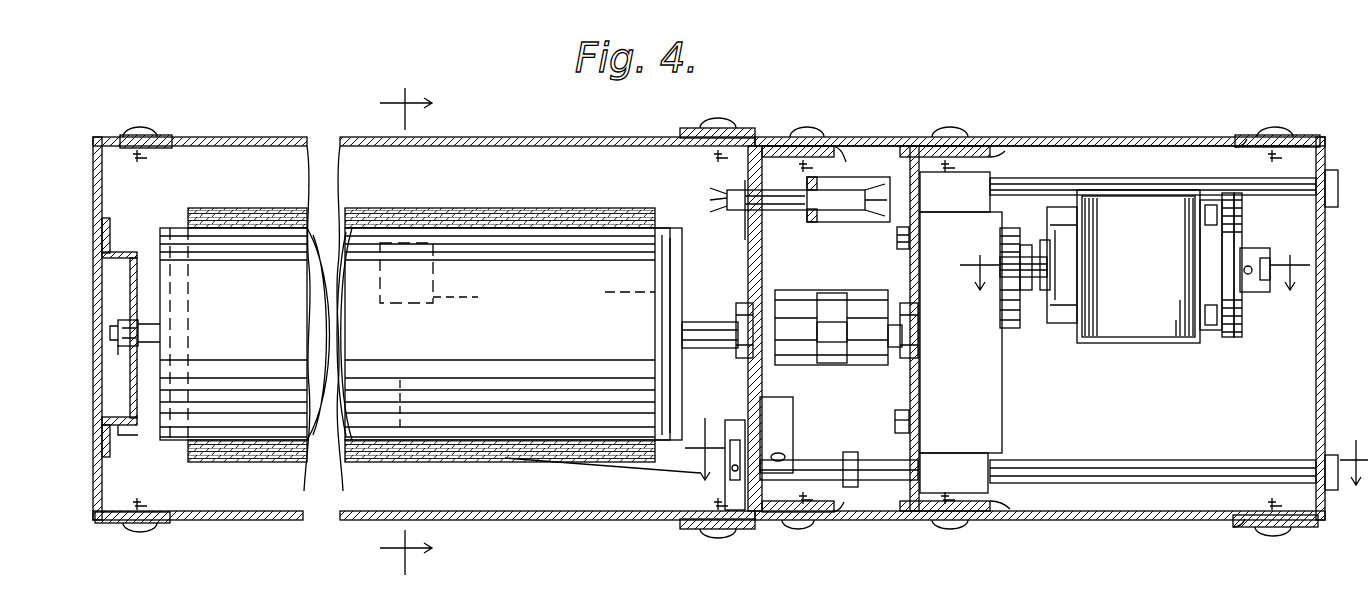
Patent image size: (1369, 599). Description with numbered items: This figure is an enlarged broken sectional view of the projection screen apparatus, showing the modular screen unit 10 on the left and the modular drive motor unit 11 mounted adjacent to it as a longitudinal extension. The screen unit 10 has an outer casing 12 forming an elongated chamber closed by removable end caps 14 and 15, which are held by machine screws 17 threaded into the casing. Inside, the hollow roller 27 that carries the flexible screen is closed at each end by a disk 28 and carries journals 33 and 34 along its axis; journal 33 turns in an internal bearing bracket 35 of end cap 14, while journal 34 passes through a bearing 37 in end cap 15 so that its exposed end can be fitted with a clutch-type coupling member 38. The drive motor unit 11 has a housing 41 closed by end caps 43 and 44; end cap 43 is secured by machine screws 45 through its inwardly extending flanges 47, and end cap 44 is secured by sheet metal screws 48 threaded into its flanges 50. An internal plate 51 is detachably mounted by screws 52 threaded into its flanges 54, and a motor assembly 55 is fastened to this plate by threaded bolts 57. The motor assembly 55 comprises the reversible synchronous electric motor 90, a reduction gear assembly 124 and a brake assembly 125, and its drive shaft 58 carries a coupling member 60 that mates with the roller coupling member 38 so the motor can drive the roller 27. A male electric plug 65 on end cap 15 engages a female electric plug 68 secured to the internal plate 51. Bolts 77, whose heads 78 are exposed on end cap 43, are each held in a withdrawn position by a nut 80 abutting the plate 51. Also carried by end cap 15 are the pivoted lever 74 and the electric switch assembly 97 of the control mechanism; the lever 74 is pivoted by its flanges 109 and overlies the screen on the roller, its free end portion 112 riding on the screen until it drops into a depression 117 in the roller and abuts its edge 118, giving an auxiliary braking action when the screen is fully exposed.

The modular screen unit 10 is at (567, 538).
The modular drive motor unit 11 is at (1097, 533).
The outer casing 12 is at (515, 140).
The end cap 14 is at (100, 190).
The end cap 15 is at (745, 240).
The machine screws 17 is at (140, 528).
The roller 27 is at (672, 230).
The disk 28 is at (170, 230).
The journal 33 is at (118, 333).
The journal 34 is at (680, 333).
The internal bearing bracket 35 is at (138, 425).
The bearing 37 is at (738, 318).
The coupling member 38 is at (803, 292).
The housing 41 is at (1095, 137).
The end cap 43 is at (1315, 372).
The end cap 44 is at (763, 240).
The machine screws 45 is at (1275, 130).
The flanges 47 is at (1240, 138).
The sheet metal screws 48 is at (803, 138).
The flanges 50 is at (840, 513).
The internal plate 51 is at (920, 397).
The screws 52 is at (950, 142).
The flanges 54 is at (990, 157).
The motor assembly 55 is at (1189, 374).
The threaded bolts 57 is at (897, 240).
The drive shaft 58 is at (893, 370).
The coupling member 60 is at (858, 368).
The male type electric plug 65 is at (737, 197).
The female type electric plug 68 is at (853, 192).
The pivoted lever 74 is at (520, 432).
The bolts 77 is at (1128, 192).
The heads 78 is at (1333, 207).
The nut 80 is at (855, 452).
The electric motor 90 is at (1115, 343).
The electric switch assembly 97 is at (735, 422).
The flanges 109 is at (640, 476).
The free end portion 112 is at (410, 395).
The depression 117 is at (480, 298).
The edge 118 is at (408, 273).
The reduction gear assembly 124 is at (1020, 378).
The brake assembly 125 is at (1256, 321).